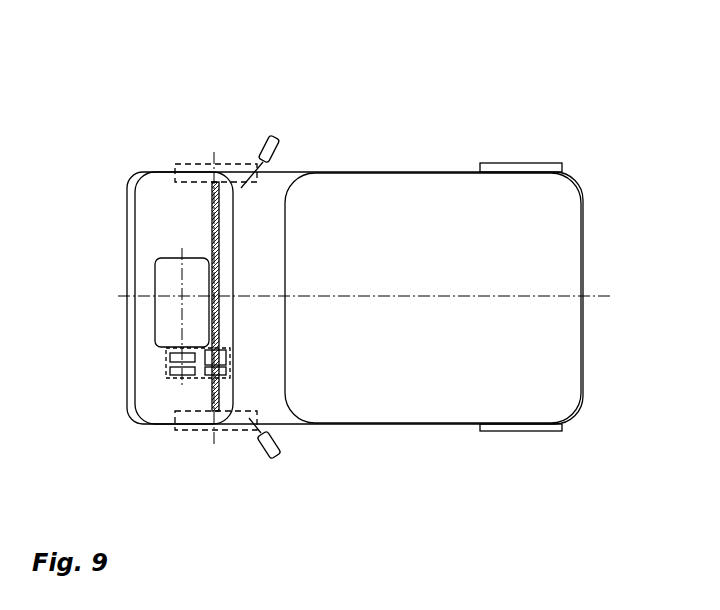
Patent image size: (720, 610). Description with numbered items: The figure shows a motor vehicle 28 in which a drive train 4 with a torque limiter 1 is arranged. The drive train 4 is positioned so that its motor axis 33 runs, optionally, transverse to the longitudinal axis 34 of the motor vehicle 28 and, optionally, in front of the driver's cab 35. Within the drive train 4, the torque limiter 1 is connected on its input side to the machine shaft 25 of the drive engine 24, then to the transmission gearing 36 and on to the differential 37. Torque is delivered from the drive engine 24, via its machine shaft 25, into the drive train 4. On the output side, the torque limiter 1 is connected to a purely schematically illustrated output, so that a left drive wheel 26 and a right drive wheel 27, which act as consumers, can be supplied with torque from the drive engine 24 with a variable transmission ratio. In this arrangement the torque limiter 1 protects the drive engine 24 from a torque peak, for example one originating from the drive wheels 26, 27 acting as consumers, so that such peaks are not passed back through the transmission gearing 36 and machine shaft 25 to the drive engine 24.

The motor vehicle 28 is at (639, 49).
The driver's cab 35 is at (370, 190).
The longitudinal axis 34 is at (522, 297).
The right drive wheel 27 is at (246, 163).
The left drive wheel 26 is at (233, 428).
The motor axis 33 is at (180, 277).
The drive train 4 is at (50, 255).
The drive engine 24 is at (168, 288).
The machine shaft 25 is at (165, 350).
The torque limiter 1 is at (165, 360).
The transmission gearing 36 is at (165, 372).
The differential 37 is at (226, 352).